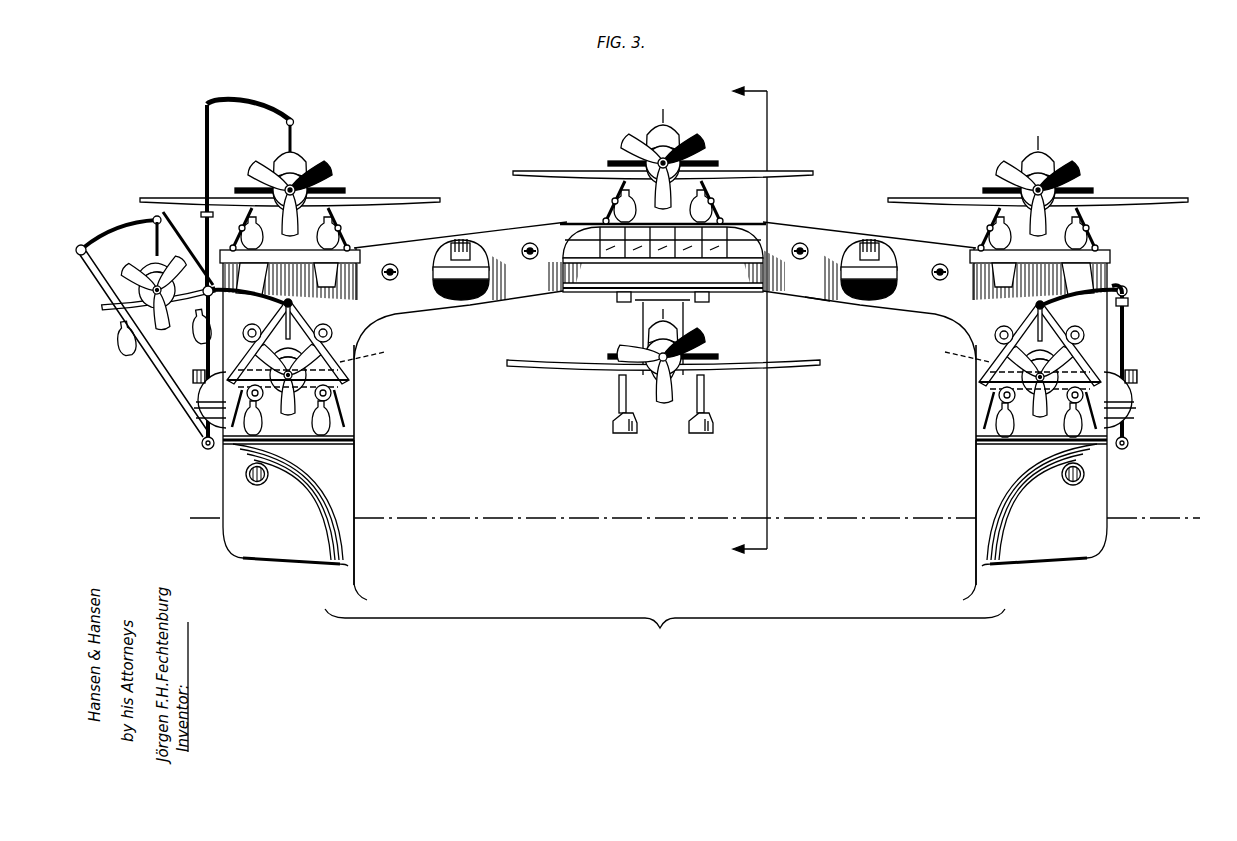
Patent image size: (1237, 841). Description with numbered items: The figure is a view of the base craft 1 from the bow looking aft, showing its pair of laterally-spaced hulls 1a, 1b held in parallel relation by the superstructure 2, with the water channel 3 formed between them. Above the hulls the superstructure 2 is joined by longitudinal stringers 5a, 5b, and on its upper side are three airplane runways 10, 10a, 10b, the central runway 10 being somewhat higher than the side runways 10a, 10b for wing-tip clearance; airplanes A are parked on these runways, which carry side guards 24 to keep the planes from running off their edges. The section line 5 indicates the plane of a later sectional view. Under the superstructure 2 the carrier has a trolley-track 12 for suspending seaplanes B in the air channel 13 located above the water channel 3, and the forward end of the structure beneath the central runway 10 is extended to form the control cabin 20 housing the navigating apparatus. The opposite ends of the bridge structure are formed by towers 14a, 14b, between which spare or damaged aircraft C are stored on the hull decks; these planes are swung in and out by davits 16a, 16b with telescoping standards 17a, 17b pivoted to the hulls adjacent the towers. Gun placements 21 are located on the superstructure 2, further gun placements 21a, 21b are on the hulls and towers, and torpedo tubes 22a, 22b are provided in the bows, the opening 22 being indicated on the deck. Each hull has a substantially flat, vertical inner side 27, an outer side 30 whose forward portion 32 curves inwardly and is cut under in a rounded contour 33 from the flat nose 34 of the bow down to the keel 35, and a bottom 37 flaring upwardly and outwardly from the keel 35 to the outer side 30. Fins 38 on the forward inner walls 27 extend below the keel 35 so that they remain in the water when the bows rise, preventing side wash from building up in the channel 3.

The base craft 1 is at (662, 645).
The port side hull 1a is at (980, 453).
The starboard hull 1b is at (337, 460).
The superstructure 2 is at (453, 224).
The channel 3 is at (668, 466).
The section line 5- 5 is at (761, 324).
The longitudinal stringer 5a is at (1000, 278).
The longitudinal stringer 5b is at (330, 278).
The central runway 10 is at (663, 226).
The side runway 10a is at (1097, 257).
The side runway 10b is at (290, 252).
The trolley-track 12 is at (625, 300).
The air channel 13 is at (570, 334).
The tower 14a is at (975, 391).
The tower 14b is at (355, 389).
The davit 16a is at (1067, 300).
The davit 16b is at (105, 234).
The telescoping standard 17a is at (1125, 331).
The telescoping standard 17b is at (204, 343).
The control cabin 20 is at (593, 250).
The gun placement 21 is at (447, 254).
The gun placement 21a is at (1130, 395).
The gun placement 21b is at (200, 395).
The deck opening 22 is at (815, 303).
The torpedo tube 22a is at (1084, 476).
The torpedo tube 22b is at (246, 470).
The side guard 24 is at (230, 245).
The inner side 27 is at (355, 483).
The outer side 30 is at (223, 477).
The forward portion 32 is at (250, 497).
The rounded contour 33 is at (312, 529).
The flat nose 34 is at (293, 438).
The keel 35 is at (341, 566).
The bottom 37 is at (268, 563).
The fin 38 is at (963, 600).
The airplane A is at (300, 168).
The seaplane B is at (683, 358).
The spare or damaged aircraft C is at (665, 352).